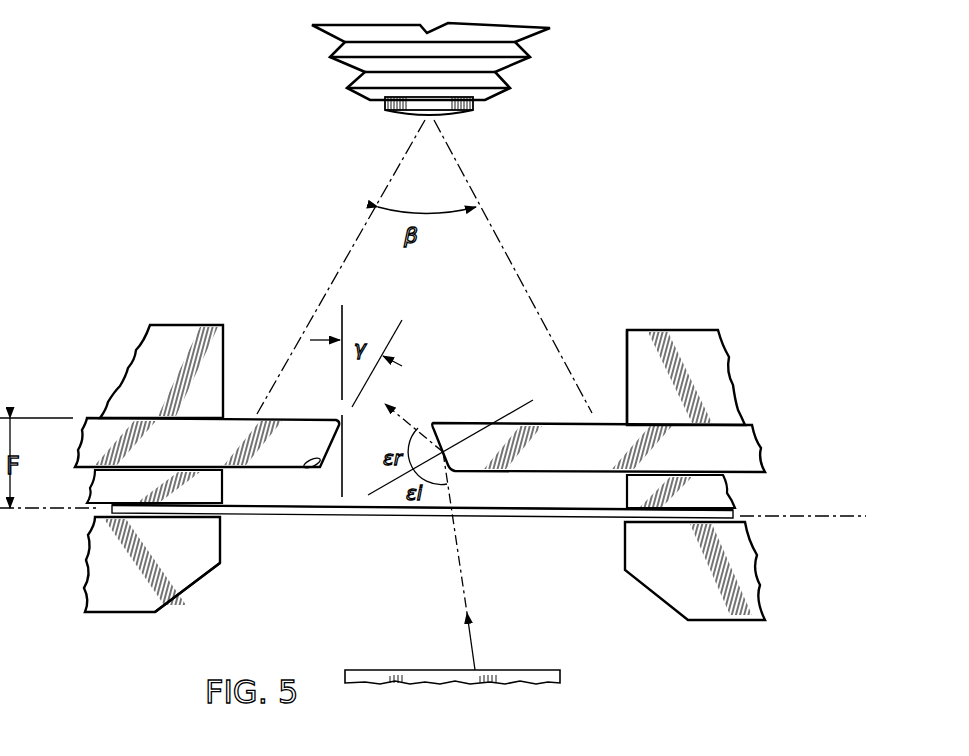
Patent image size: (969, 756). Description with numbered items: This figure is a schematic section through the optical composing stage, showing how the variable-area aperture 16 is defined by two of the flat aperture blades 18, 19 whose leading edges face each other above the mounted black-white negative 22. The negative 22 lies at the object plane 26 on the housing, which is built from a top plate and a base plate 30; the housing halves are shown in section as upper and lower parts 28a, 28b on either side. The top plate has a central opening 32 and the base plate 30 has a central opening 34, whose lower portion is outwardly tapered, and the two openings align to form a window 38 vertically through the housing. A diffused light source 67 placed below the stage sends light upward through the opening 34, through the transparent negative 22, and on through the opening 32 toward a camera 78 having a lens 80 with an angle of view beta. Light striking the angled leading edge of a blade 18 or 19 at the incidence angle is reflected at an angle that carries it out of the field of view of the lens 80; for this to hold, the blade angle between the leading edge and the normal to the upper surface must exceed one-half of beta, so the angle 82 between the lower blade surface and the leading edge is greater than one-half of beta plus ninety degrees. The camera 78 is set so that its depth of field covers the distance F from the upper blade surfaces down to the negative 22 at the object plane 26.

The variable-area aperture 16 is at (437, 380).
The aperture-defining blade 18 is at (147, 417).
The aperture-defining blade 19 is at (634, 423).
The black-white negative 22 is at (493, 519).
The object plane 26 is at (78, 510).
The upper housing part 28a is at (131, 354).
The lower housing part 28b is at (222, 483).
The base plate 30 is at (82, 600).
The central opening of top plate 32 is at (626, 356).
The central opening of base plate 34 is at (222, 550).
The window 38 is at (575, 632).
The diffused light source 67 is at (479, 685).
The camera 78 is at (532, 57).
The lens 80 is at (470, 111).
The angle 82 is at (322, 468).